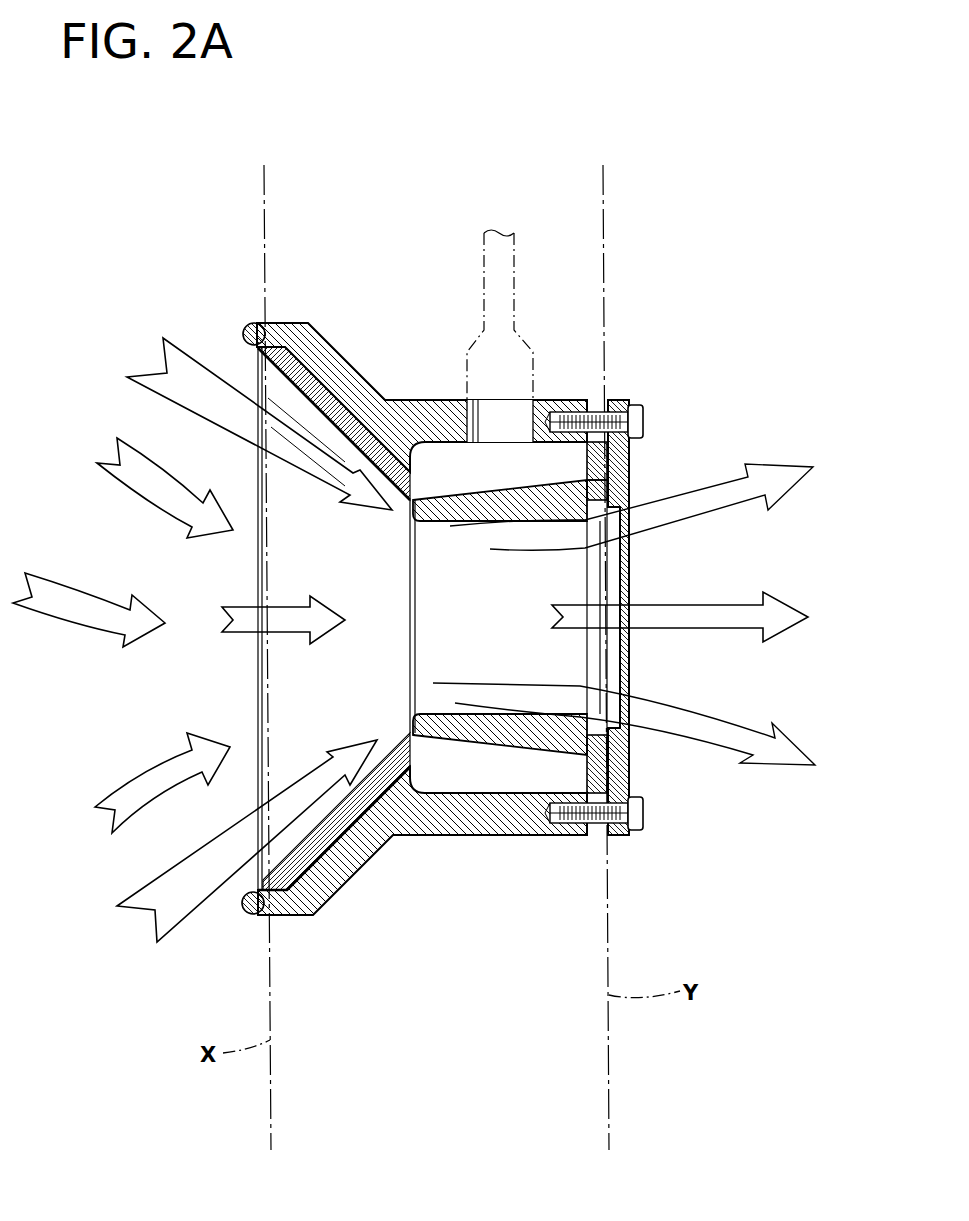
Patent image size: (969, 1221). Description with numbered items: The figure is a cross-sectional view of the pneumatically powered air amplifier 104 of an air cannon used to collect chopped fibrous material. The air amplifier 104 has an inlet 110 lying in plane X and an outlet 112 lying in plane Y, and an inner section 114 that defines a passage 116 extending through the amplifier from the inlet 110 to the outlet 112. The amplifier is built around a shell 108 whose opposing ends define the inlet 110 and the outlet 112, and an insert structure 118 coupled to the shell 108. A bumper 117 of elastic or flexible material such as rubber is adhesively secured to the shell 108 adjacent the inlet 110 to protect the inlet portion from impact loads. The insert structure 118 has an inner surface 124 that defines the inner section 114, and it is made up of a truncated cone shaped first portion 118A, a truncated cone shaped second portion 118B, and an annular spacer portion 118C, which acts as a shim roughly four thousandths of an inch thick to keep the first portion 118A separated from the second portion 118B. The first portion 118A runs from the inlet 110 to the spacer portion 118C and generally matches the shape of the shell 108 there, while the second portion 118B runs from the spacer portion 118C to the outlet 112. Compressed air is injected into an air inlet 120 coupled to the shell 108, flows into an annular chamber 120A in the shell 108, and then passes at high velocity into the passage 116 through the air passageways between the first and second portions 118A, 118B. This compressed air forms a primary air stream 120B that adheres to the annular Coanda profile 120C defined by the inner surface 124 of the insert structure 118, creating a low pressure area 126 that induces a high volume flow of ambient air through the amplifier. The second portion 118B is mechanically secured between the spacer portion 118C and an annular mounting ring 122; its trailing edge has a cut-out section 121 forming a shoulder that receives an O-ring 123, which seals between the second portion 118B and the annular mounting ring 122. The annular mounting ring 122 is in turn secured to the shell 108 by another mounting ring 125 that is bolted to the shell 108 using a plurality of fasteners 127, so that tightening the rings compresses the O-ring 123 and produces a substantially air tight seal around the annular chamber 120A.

The air amplifier 104 is at (460, 852).
The shell 108 is at (362, 380).
The inlet 110 is at (203, 683).
The outlet 112 is at (617, 616).
The inner section 114 is at (313, 483).
The passage 116 is at (552, 585).
The bumper 117 is at (243, 328).
The insert structure 118 is at (334, 785).
The first portion 118A is at (327, 828).
The second portion 118B is at (533, 733).
The spacer portion 118C is at (410, 513).
The air inlet 120 is at (483, 343).
The annular chamber 120A is at (543, 458).
The primary air stream 120B is at (490, 550).
The annular Coanda profile 120C is at (446, 534).
The cut-out section 121 is at (598, 500).
The annular mounting ring 122 is at (603, 468).
The O-ring 123 is at (600, 487).
The inner surface 124 is at (297, 843).
The mounting ring 125 is at (610, 760).
The low pressure area 126 is at (243, 610).
The fasteners 127 is at (636, 404).